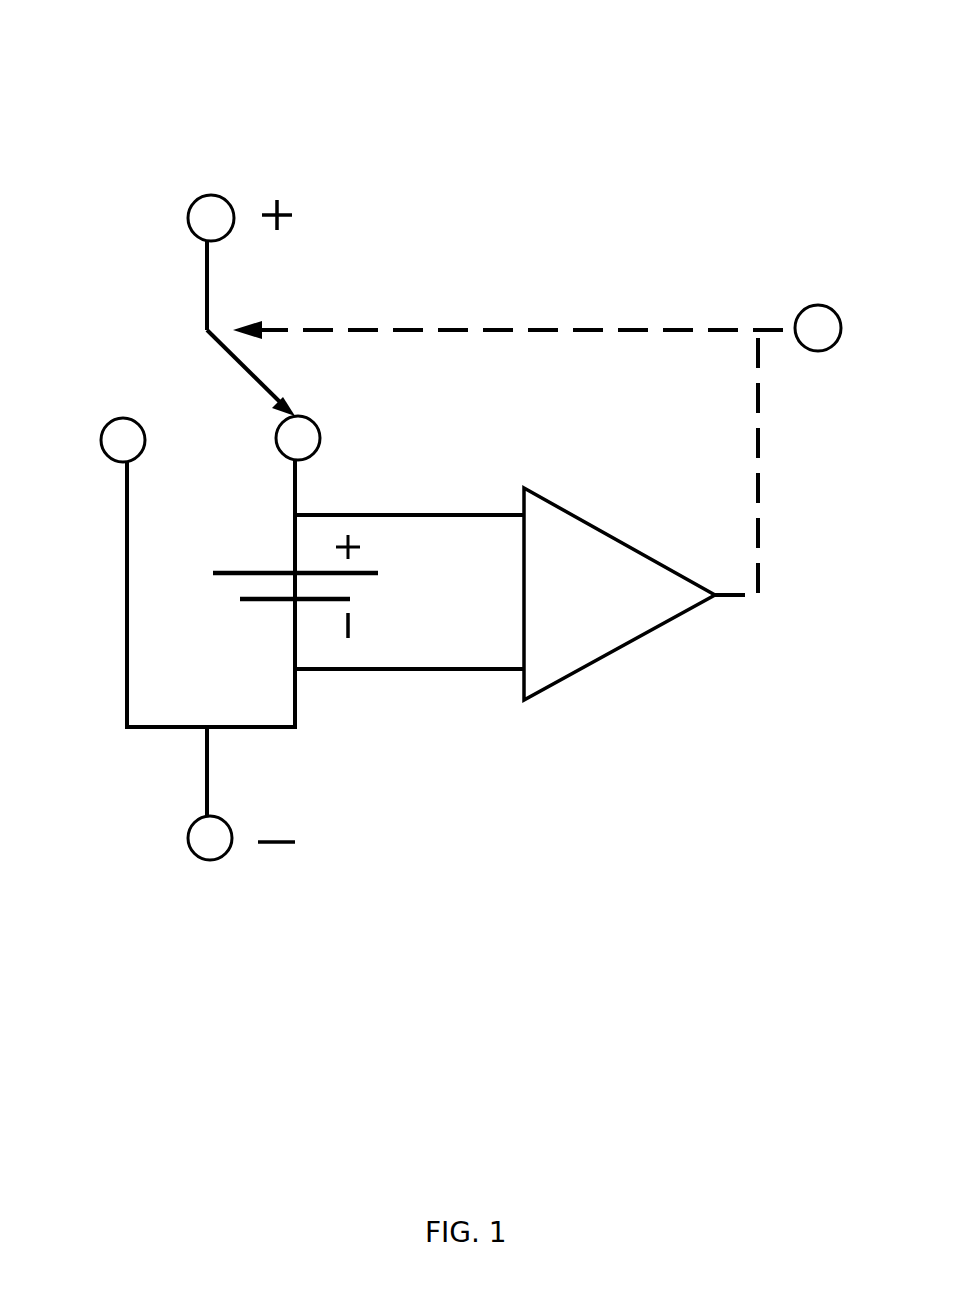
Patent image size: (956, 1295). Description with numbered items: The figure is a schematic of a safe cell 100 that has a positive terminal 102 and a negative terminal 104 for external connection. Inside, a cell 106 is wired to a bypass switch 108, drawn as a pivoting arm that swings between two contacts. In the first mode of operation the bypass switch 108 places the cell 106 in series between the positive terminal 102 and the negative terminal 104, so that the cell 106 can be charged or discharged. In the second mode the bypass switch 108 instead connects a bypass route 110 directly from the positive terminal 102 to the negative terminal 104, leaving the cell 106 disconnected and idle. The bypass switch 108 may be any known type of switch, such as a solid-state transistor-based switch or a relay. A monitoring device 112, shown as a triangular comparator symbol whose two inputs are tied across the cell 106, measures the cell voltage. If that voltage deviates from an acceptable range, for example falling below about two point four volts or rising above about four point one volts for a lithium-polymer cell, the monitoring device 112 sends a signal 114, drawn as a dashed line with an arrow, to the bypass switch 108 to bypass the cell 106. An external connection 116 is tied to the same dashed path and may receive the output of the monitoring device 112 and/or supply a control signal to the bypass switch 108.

The safe cell 100 is at (148, 104).
The positive terminal 102 is at (208, 218).
The negative terminal 104 is at (212, 835).
The cell 106 is at (247, 580).
The bypass switch 108 is at (248, 375).
The bypass route 110 is at (127, 598).
The monitoring device 112 is at (520, 594).
The signal 114 is at (465, 330).
The external connection 116 is at (827, 343).